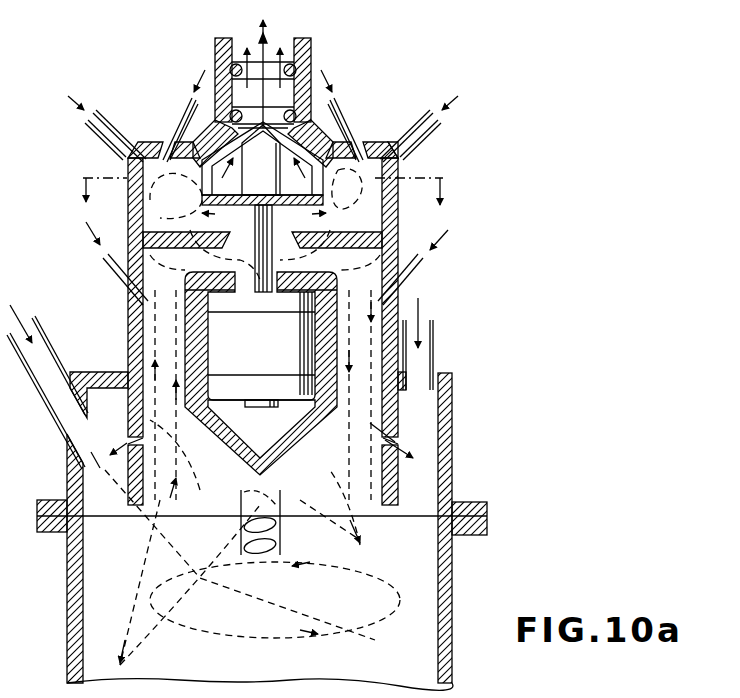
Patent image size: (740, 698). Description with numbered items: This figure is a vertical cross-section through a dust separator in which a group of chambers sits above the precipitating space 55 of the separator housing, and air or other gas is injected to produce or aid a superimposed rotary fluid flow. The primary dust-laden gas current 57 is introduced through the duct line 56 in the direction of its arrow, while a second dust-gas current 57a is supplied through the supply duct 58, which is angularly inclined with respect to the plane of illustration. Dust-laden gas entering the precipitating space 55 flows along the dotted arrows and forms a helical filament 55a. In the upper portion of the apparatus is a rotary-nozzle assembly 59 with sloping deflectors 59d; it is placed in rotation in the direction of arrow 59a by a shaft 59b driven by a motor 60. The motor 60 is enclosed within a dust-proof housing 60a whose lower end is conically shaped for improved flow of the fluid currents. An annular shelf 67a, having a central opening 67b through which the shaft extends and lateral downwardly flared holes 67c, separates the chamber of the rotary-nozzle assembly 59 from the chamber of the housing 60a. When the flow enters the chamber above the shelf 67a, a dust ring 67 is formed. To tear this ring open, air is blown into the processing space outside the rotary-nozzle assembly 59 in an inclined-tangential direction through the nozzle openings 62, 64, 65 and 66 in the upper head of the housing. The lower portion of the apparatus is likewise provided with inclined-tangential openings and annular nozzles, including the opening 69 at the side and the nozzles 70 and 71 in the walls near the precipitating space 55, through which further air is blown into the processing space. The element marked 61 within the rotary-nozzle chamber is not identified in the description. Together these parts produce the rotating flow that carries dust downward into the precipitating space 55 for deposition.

The precipitating space 55 is at (130, 592).
The helical filament 55a is at (276, 510).
The duct line 56 is at (50, 343).
The dust-laden gas current 57 is at (20, 318).
The second dust-gas current 57a is at (422, 310).
The supply duct 58 is at (434, 328).
The rotary-nozzle assembly 59 is at (255, 210).
The direction of rotation arrow 59a is at (300, 314).
The shaft 59b is at (261, 160).
The sloping deflectors 59d is at (393, 160).
The motor 60 is at (253, 336).
The dust-proof housing 60a is at (292, 430).
The valve chamber 61 is at (242, 184).
The nozzle opening 62 is at (124, 132).
The nozzle opening 64 is at (414, 132).
The nozzle opening 65 is at (183, 118).
The nozzle opening 66 is at (347, 140).
The dust ring 67 is at (129, 167).
The annular shelf 67a is at (188, 233).
The central opening 67b is at (258, 286).
The lateral downwardly flared holes 67c is at (404, 240).
The inclined-tangential opening 69 is at (412, 272).
The annular nozzle 70 is at (126, 442).
The annular nozzle 71 is at (397, 444).